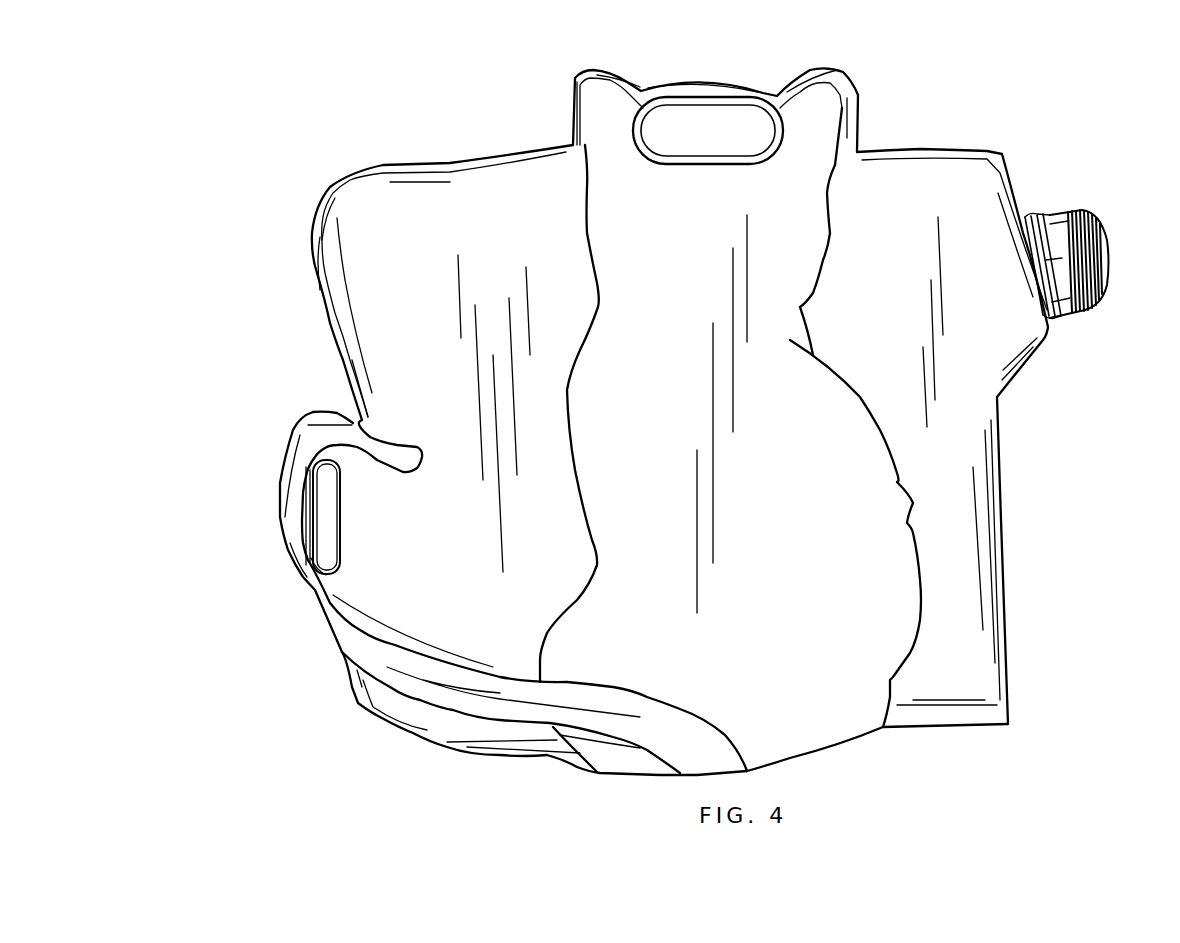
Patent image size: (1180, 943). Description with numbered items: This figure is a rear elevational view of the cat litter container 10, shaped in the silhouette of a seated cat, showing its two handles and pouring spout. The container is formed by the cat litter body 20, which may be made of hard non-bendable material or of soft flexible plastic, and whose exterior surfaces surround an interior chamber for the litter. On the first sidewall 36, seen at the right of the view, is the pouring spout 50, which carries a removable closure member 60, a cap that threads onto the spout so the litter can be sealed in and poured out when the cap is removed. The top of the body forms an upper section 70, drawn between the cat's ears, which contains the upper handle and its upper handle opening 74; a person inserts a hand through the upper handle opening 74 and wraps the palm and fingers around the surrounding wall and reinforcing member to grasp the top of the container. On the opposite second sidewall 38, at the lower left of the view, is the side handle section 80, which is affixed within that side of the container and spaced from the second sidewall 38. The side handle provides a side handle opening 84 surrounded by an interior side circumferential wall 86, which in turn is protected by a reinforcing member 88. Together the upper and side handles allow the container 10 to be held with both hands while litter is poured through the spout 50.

The cat litter container 10 is at (1042, 137).
The cat litter body 20 is at (1000, 416).
The first sidewall 36 is at (1000, 510).
The second sidewall 38 is at (315, 283).
The pouring spout 50 is at (1070, 312).
The removable closure member 60 is at (1100, 227).
The upper section 70 is at (672, 66).
The upper handle opening 74 is at (721, 120).
The side handle section 80 is at (238, 515).
The side handle opening 84 is at (325, 492).
The interior side circumferential wall 86 is at (313, 567).
The reinforcing member 88 is at (308, 535).